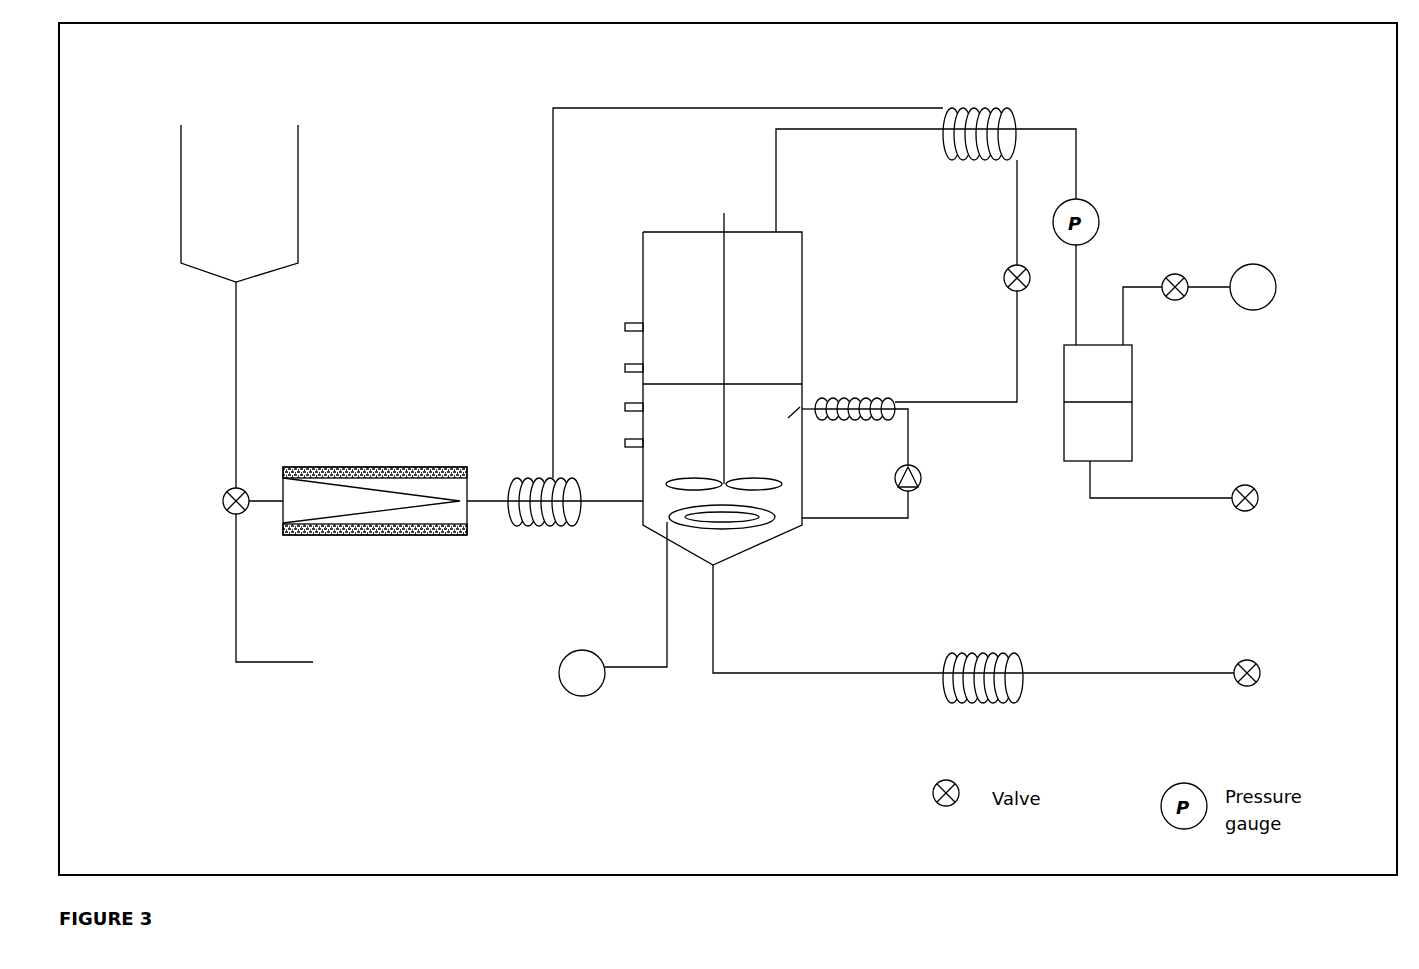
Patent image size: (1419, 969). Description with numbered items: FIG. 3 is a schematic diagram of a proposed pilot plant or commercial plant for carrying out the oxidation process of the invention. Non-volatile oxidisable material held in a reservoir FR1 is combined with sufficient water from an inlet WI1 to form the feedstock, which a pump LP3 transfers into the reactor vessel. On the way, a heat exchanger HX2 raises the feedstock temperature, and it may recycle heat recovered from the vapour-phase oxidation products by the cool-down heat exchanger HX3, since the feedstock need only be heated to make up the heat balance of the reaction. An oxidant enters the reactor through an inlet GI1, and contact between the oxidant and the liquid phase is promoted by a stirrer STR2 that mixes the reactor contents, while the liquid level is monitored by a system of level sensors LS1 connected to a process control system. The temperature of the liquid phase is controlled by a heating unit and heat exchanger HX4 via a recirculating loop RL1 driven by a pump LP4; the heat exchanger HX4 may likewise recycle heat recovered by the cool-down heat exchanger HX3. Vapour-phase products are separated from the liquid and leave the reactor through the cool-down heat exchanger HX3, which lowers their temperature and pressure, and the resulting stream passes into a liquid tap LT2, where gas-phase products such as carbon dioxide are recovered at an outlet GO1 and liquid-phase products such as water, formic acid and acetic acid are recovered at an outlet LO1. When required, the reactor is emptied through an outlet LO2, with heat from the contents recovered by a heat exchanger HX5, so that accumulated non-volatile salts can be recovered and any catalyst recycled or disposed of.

The reservoir FR1 is at (270, 203).
The water inlet WI1 is at (303, 595).
The pump LP3 is at (375, 516).
The heat exchanger HX2 is at (545, 522).
The stirrer STR2 is at (722, 372).
The level sensors LS1 is at (616, 385).
The inlet GI1 is at (613, 630).
The heat exchanger HX5 is at (983, 696).
The outlet LO2 is at (1143, 656).
The cool-down heat exchanger HX3 is at (980, 119).
The heat exchanger HX4 is at (855, 390).
The recirculating loop RL1 is at (848, 477).
The pump LP4 is at (926, 478).
The liquid tap LT2 is at (1118, 403).
The outlet GO1 is at (1199, 304).
The outlet LO1 is at (1176, 505).